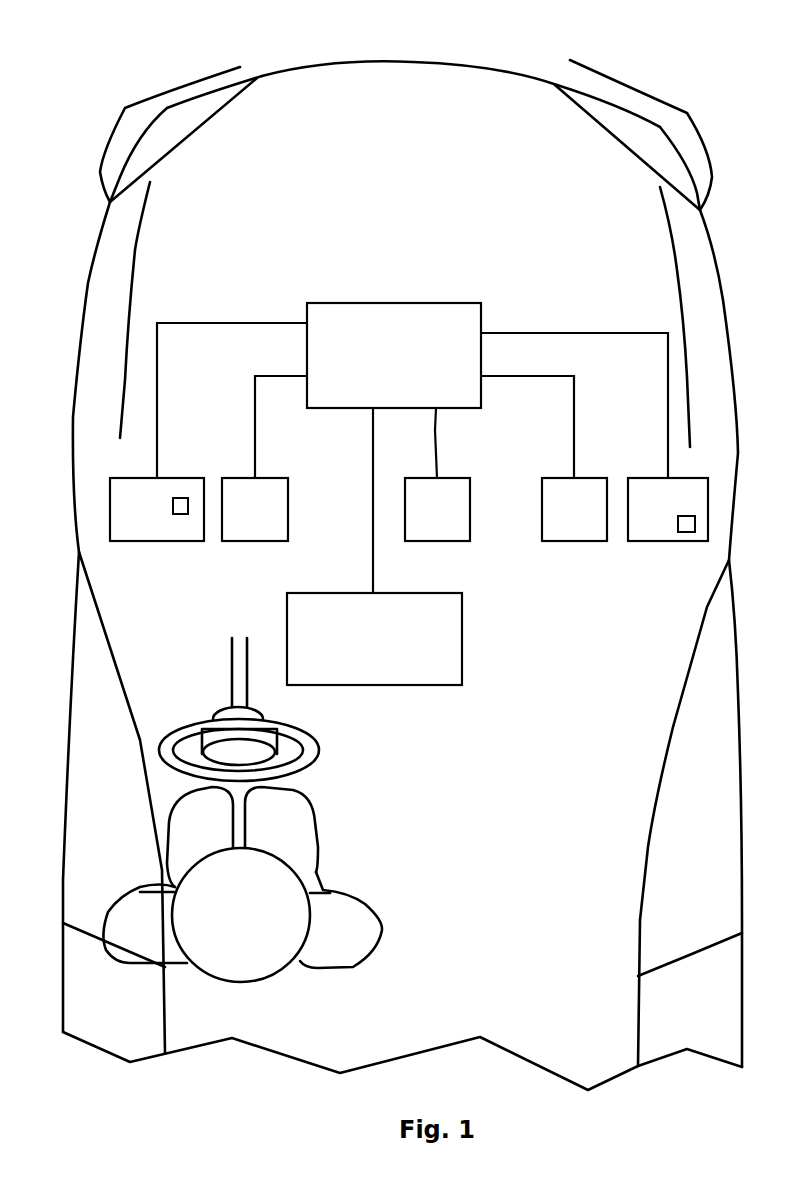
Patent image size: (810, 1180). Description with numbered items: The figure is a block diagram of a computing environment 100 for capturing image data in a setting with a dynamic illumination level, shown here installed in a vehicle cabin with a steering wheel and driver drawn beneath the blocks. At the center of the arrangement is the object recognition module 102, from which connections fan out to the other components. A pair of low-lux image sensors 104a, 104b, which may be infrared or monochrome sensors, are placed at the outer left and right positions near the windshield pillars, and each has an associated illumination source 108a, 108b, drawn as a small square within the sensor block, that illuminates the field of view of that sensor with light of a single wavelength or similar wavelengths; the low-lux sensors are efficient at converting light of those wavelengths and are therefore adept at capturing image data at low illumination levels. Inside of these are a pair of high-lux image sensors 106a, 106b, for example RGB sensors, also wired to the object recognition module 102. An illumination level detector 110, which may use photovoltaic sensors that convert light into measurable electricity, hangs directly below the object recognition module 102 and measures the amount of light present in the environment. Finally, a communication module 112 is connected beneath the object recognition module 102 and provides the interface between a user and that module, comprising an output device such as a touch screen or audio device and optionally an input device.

The computing environment 100 is at (124, 80).
The object recognition module 102 is at (394, 355).
The low-lux image sensor 104a is at (157, 509).
The low-lux image sensor 104b is at (668, 509).
The high-lux image sensor 106a is at (255, 509).
The high-lux image sensor 106b is at (574, 509).
The illumination source 108a is at (183, 515).
The illumination source 108b is at (687, 533).
The illumination level detector 110 is at (437, 509).
The communication module 112 is at (374, 639).